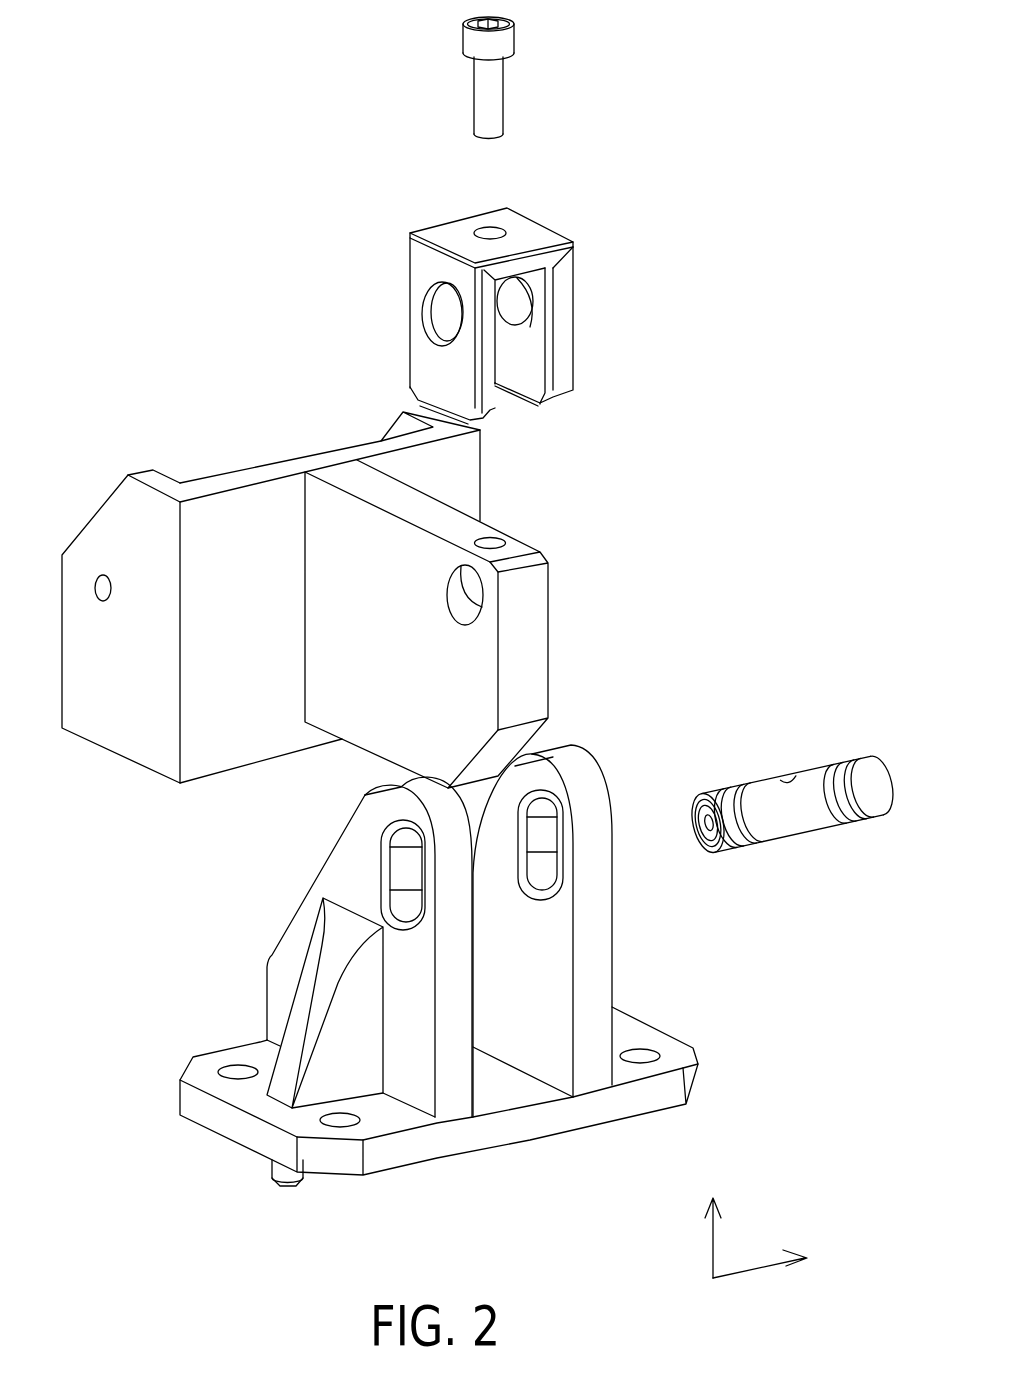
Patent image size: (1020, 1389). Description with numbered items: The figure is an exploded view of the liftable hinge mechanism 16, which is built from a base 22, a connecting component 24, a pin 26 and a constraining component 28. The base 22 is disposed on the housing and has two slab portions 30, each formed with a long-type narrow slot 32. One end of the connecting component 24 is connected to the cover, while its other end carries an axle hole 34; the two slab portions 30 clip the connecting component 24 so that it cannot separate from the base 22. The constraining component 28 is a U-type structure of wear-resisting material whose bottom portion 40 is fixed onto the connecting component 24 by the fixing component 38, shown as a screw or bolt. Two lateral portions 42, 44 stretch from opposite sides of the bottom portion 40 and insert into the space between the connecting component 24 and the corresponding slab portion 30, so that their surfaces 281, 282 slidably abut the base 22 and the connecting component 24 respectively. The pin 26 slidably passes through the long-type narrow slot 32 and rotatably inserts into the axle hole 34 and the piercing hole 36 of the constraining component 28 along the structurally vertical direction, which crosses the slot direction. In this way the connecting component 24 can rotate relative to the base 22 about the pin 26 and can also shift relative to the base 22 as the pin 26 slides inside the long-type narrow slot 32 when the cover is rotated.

The liftable hinge mechanism 16 is at (258, 140).
The base 22 is at (472, 987).
The connecting component 24 is at (136, 735).
The pin 26 is at (808, 815).
The constraining component 28 is at (533, 235).
The surface 281 is at (583, 337).
The surface 282 is at (551, 369).
The slab portion 30 is at (598, 975).
The long-type narrow slot 32 is at (387, 915).
The axle hole 34 is at (456, 621).
The piercing hole 36 is at (426, 306).
The fixing component 38 is at (495, 90).
The bottom portion 40 is at (458, 232).
The lateral portion 42 is at (430, 380).
The lateral portion 44 is at (545, 412).